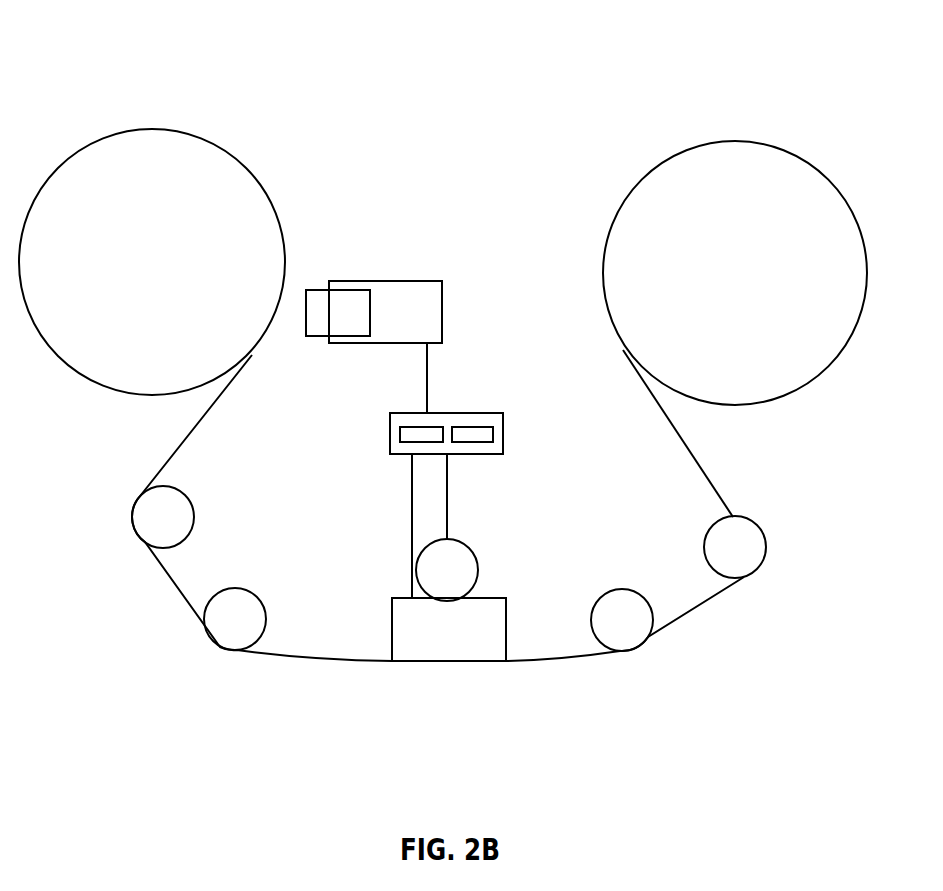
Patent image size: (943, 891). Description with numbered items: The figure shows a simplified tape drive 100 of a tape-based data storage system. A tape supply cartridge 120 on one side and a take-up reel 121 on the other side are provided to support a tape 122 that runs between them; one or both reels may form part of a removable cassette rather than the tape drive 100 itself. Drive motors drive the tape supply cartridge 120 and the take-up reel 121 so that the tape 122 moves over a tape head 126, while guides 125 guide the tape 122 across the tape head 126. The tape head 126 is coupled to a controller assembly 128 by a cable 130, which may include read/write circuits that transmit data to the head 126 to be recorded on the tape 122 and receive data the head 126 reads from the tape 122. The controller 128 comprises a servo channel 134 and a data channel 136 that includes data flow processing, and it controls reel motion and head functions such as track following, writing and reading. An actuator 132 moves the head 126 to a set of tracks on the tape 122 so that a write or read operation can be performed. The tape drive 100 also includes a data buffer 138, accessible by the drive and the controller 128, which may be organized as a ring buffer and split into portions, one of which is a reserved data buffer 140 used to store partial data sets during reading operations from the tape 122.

The tape drive 100 is at (487, 106).
The tape supply cartridge 120 is at (275, 209).
The take-up reel 121 is at (788, 395).
The tape 122 is at (315, 655).
The guides 125 is at (235, 588).
The tape head 126 is at (506, 630).
The controller assembly 128 is at (447, 413).
The cable 130 is at (412, 567).
The actuator 132 is at (470, 547).
The servo channel 134 is at (483, 427).
The data channel 136 is at (412, 427).
The data buffer 138 is at (390, 281).
The reserved data buffer 140 is at (323, 324).